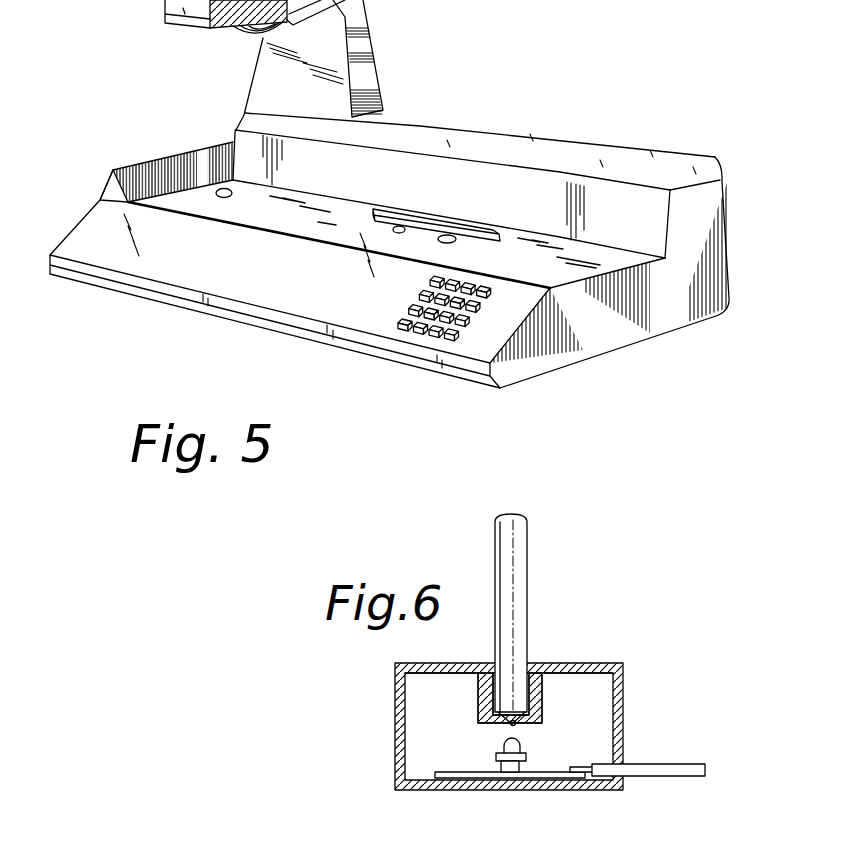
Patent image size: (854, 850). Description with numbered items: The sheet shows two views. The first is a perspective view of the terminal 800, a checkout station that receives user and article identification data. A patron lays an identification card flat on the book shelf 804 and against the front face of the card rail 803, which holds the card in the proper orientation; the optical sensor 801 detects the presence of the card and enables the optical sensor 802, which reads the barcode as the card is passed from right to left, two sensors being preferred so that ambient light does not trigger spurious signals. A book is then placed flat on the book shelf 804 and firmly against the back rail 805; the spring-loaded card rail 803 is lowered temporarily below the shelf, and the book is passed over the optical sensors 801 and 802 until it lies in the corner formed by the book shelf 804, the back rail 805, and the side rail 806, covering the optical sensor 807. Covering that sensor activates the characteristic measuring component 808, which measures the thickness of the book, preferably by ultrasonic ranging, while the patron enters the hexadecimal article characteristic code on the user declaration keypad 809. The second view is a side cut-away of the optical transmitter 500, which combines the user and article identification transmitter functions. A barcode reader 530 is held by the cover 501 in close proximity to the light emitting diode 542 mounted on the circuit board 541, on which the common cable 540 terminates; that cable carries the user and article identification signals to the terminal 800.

In FIG. 5, the terminal 800 is at (160, 328).
In FIG. 5, the optical sensor 801 is at (455, 241).
In FIG. 5, the optical sensor 802 is at (393, 230).
In FIG. 5, the card rail 803 is at (473, 227).
In FIG. 5, the book shelf 804 is at (338, 210).
In FIG. 5, the back rail 805 is at (645, 210).
In FIG. 5, the side rail 806 is at (148, 163).
In FIG. 5, the optical sensor 807 is at (231, 196).
In FIG. 5, the characteristic measuring component 808 is at (247, 32).
In FIG. 5, the user declaration keypad 809 is at (395, 320).
In FIG. 6, the optical transmitter 500 is at (468, 702).
In FIG. 6, the cover 501 is at (593, 665).
In FIG. 6, the barcode reader 530 is at (528, 575).
In FIG. 6, the common cable 540 is at (658, 765).
In FIG. 6, the circuit board 541 is at (462, 780).
In FIG. 6, the light emitting diode (LED) 542 is at (503, 747).